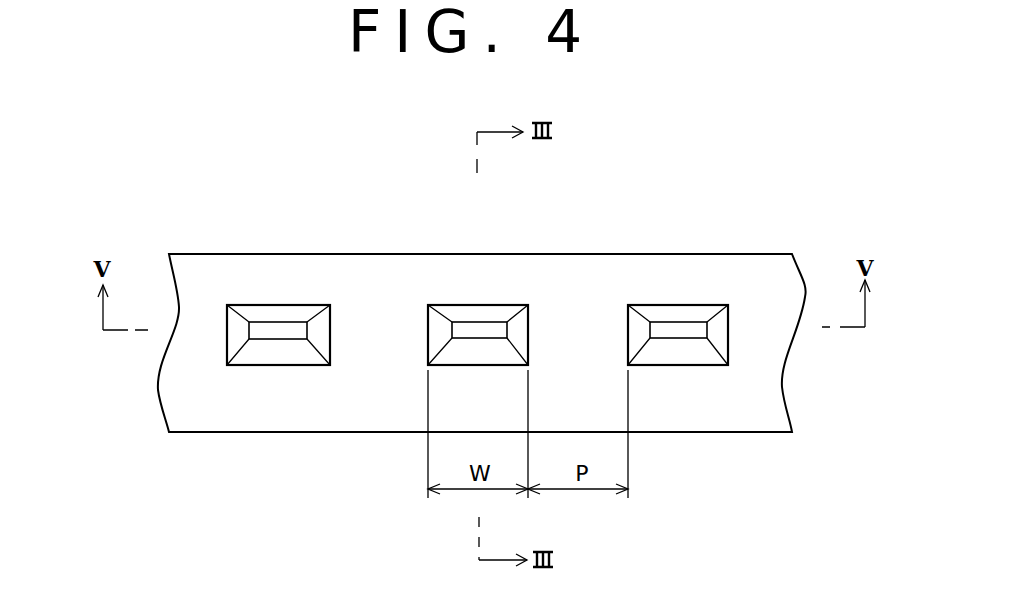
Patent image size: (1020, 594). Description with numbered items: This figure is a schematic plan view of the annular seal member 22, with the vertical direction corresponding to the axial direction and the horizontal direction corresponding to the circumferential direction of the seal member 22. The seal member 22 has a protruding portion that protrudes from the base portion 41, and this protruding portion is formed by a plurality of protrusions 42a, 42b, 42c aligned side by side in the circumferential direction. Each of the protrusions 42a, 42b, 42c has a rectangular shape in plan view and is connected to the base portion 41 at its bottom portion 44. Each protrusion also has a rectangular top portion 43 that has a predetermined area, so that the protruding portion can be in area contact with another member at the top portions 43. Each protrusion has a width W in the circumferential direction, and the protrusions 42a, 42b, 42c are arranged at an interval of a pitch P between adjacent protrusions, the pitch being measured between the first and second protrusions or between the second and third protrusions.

The seal member 22 is at (482, 312).
The base portion 41 is at (363, 315).
The protrusion 42a is at (276, 315).
The protrusion 42b is at (473, 278).
The protrusion 42c is at (678, 313).
The top portion 43 is at (478, 330).
The bottom portion 44 is at (513, 302).